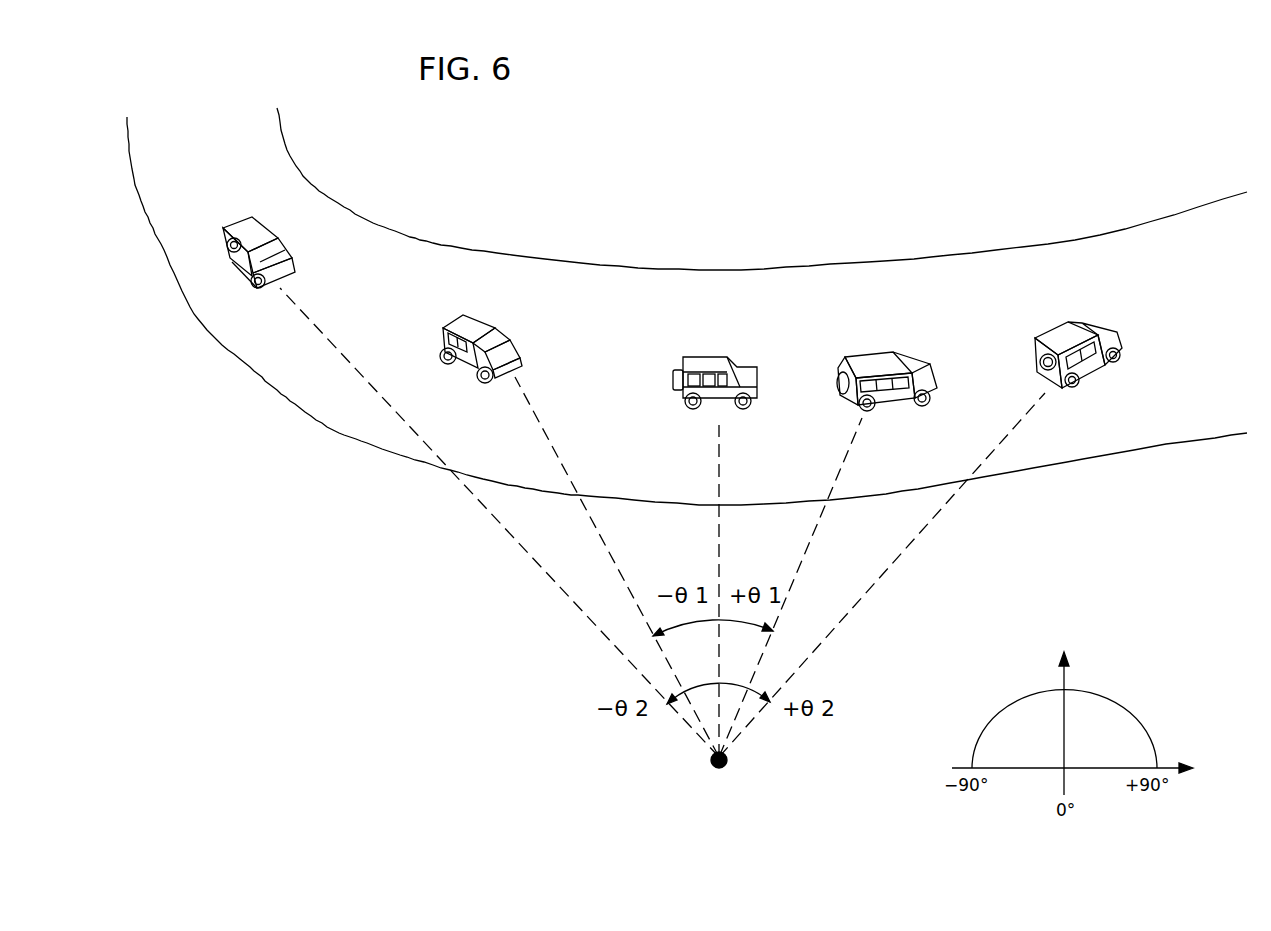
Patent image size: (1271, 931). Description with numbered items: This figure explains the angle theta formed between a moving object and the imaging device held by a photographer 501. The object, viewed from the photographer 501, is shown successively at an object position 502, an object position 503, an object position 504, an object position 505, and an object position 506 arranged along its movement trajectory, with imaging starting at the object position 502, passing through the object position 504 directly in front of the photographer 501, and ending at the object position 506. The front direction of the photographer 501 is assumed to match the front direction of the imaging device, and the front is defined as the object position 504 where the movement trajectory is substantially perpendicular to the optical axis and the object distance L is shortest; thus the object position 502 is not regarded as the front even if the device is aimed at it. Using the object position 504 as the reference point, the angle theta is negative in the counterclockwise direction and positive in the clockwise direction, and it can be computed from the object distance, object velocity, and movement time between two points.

The photographer 501 is at (727, 762).
The object position 502 is at (291, 262).
The object position 503 is at (493, 328).
The object position 504 is at (745, 360).
The object position 505 is at (930, 370).
The object position 506 is at (1090, 326).